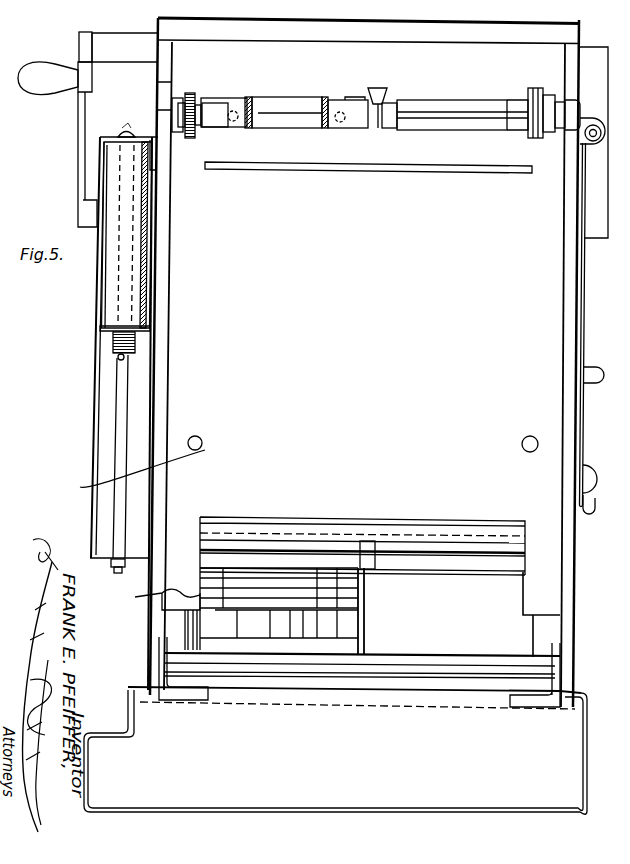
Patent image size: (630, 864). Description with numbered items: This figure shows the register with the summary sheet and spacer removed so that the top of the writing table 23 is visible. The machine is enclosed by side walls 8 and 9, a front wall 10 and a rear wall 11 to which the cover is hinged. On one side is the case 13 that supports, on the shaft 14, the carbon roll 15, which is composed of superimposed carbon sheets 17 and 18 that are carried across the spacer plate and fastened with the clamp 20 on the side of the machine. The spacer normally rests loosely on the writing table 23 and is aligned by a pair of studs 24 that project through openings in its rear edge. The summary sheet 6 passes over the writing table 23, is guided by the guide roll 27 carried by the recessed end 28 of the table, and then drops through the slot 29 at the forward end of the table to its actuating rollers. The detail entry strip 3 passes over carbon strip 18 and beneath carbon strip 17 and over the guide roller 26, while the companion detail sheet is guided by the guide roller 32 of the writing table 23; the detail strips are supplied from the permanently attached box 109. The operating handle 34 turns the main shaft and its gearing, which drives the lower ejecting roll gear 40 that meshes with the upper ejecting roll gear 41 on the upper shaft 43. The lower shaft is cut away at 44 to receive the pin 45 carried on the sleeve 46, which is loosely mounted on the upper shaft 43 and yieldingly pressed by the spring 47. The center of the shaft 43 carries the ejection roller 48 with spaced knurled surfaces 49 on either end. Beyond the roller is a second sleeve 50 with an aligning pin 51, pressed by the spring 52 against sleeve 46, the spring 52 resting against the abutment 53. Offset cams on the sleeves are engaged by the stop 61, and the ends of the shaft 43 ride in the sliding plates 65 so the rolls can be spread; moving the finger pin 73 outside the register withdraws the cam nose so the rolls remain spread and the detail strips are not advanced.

The detail entry strip 3 is at (348, 632).
The summary sheet 6 is at (480, 532).
The side wall 8 is at (160, 45).
The side wall 9 is at (572, 42).
The front wall 10 is at (360, 26).
The rear wall 11 is at (285, 706).
The case 13 is at (94, 415).
The shaft 14 is at (120, 372).
The carbon roll 15 is at (108, 305).
The carbon sheet 17 is at (146, 270).
The carbon sheet 18 is at (142, 290).
The clamp 20 is at (586, 258).
The writing table 23 is at (80, 487).
The studs 24 is at (198, 436).
The guide roller 26 is at (462, 560).
The guide roll 27 is at (426, 523).
The recessed end 28 is at (522, 592).
The slot 29 is at (312, 172).
The guide roller 32 is at (420, 545).
The operating handle 34 is at (80, 127).
The lower ejecting roll gear 40 is at (190, 100).
The upper ejecting roll gear 41 is at (199, 105).
The upper shaft 43 is at (450, 115).
The cut-away portion 44 is at (235, 98).
The pin 45 is at (250, 97).
The sleeve 46 is at (235, 122).
The spring 47 is at (215, 115).
The ejection roller 48 is at (283, 110).
The knurled surfaces 49 is at (322, 116).
The second sleeve 50 is at (348, 100).
The aligning pin 51 is at (338, 124).
The spring 52 is at (378, 128).
The abutment 53 is at (396, 106).
The stop 61 is at (384, 88).
The sliding plates 65 is at (180, 115).
The finger pin 73 is at (599, 368).
The box for detail strips 109 is at (365, 608).